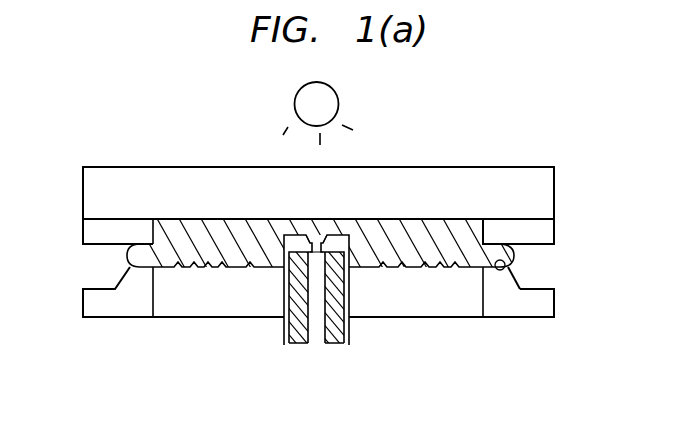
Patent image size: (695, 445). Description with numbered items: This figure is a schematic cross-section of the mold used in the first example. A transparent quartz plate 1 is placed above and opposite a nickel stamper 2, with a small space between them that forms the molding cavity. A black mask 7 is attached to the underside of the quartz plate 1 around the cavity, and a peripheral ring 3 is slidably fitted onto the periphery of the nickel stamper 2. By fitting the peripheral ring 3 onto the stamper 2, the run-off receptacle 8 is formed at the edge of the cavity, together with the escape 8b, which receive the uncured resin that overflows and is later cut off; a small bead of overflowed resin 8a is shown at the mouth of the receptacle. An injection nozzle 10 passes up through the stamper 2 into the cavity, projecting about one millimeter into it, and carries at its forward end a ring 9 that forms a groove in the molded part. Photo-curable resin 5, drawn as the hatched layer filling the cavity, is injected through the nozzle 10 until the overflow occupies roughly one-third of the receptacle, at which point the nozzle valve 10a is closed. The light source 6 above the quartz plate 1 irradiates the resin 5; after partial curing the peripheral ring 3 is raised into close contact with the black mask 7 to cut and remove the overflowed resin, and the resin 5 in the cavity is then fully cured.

The quartz plate 1 is at (545, 190).
The nickel stamper 2 is at (462, 303).
The peripheral ring 3 is at (543, 303).
The photo-curable resin 5 is at (183, 231).
The light source 6 is at (339, 103).
The black mask 7 is at (545, 231).
The run-off receptacle 8 is at (522, 255).
The small bead 8a is at (500, 270).
The escape 8b is at (527, 278).
The ring 9 is at (342, 242).
The injection nozzle 10 is at (353, 333).
The nozzle valve 10a is at (316, 322).